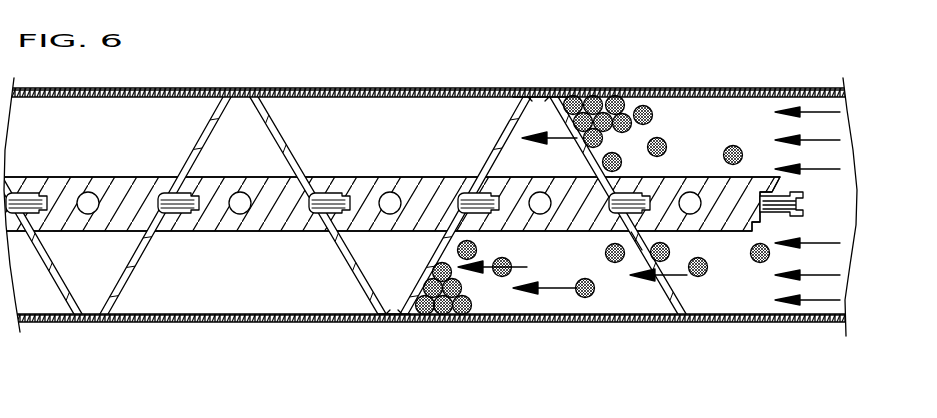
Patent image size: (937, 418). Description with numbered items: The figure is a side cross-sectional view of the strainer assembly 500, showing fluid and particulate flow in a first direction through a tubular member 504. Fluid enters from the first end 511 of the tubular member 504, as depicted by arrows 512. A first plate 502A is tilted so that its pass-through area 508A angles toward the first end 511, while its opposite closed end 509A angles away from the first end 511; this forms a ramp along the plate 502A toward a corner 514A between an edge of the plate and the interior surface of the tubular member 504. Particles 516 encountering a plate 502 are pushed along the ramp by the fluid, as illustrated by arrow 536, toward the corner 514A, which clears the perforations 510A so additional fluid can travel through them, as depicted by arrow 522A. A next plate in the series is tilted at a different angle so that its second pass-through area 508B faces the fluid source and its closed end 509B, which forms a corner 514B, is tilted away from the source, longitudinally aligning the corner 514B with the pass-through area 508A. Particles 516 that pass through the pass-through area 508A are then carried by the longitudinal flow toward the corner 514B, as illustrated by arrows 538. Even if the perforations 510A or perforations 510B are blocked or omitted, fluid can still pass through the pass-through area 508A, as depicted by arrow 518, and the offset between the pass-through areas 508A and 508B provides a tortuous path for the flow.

The strainer assembly 500 is at (360, 54).
The plate 502 is at (401, 204).
The first plate 502A is at (569, 211).
The tubular member 504 is at (756, 88).
The pass-through area 508A is at (662, 297).
The second pass-through area 508B is at (510, 122).
The closed end 509A is at (543, 96).
The closed end 509B is at (398, 315).
The perforations 510A is at (607, 100).
The perforations 510B is at (428, 268).
The first end 511 is at (812, 320).
The arrows 512 is at (820, 242).
The corner 514A is at (567, 97).
The corner 514B is at (415, 317).
The particles 516 is at (653, 116).
The arrow 518 is at (679, 274).
The arrow 522A is at (563, 140).
The arrow 536 is at (654, 236).
The arrows 538 is at (554, 287).